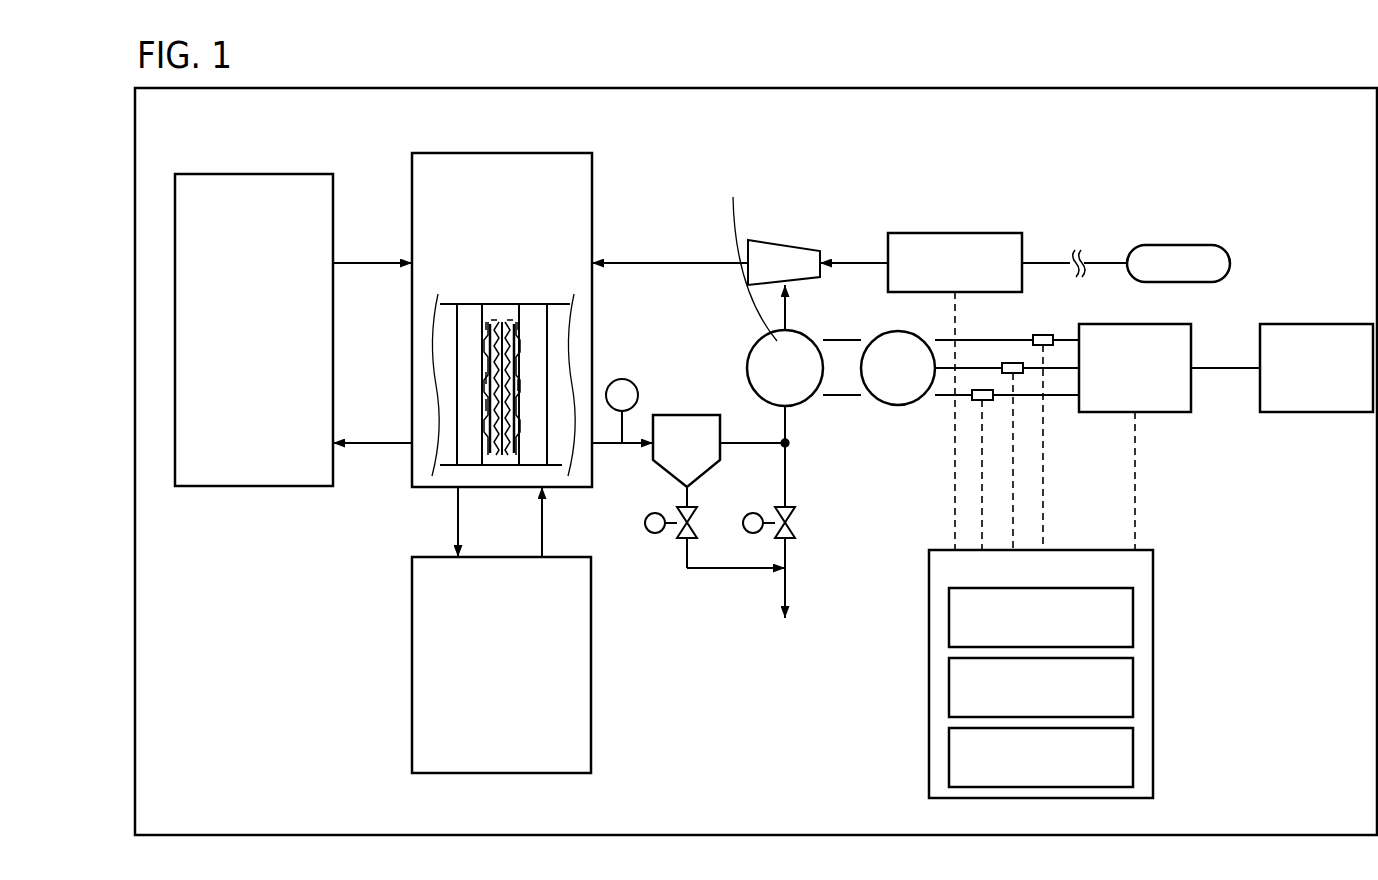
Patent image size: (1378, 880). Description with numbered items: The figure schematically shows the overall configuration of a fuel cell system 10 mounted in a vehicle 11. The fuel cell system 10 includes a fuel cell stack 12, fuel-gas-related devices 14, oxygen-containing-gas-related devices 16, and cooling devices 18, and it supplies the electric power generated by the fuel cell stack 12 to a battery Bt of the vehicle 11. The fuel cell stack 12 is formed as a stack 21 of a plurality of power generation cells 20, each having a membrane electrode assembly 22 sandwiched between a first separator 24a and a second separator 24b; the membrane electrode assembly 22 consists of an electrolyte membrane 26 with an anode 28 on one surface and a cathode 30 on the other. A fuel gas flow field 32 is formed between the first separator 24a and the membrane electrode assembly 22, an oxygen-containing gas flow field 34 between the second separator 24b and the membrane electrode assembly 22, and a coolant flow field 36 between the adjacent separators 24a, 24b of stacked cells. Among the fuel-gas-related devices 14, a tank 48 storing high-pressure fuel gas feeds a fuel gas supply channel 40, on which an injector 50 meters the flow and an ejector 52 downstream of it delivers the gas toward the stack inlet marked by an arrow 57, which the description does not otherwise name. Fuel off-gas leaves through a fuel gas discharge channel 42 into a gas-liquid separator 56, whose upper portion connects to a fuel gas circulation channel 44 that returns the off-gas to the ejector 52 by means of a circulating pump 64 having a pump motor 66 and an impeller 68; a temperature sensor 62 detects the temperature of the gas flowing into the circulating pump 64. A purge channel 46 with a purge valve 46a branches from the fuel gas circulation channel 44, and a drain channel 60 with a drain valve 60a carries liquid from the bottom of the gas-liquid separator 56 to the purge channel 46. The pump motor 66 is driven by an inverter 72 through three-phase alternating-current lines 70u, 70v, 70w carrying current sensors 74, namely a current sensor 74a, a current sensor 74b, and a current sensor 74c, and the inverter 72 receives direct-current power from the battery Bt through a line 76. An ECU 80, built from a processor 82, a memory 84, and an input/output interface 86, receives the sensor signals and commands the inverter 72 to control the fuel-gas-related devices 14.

The fuel cell system 10 is at (204, 145).
The vehicle 11 is at (392, 88).
The fuel cell stack 12 is at (397, 160).
The fuel-gas-related devices 14 is at (989, 224).
The oxygen-containing-gas-related devices 16 is at (240, 165).
The cooling devices 18 is at (395, 633).
The power generation cell 20 is at (533, 462).
The stack 21 is at (550, 471).
The membrane electrode assembly 22 is at (457, 256).
The first separator 24a is at (489, 354).
The second separator 24b is at (516, 360).
The electrolyte membrane 26 is at (502, 330).
The anode 28 is at (488, 338).
The cathode 30 is at (517, 338).
The fuel gas flow field 32 is at (488, 380).
The oxygen-containing gas flow field 34 is at (516, 385).
The coolant flow field 36 is at (489, 405).
The fuel gas supply channel 40 is at (655, 263).
The fuel gas discharge channel 42 is at (605, 447).
The fuel gas circulation channel 44 is at (788, 424).
The purge channel 46 is at (788, 479).
The purge valve 46a is at (797, 524).
The tank 48 is at (1167, 245).
The injector 50 is at (955, 233).
The ejector 52 is at (770, 240).
The gas-liquid separator 56 is at (688, 415).
The fuel gas inlet 57 is at (612, 244).
The drain channel 60 is at (718, 570).
The drain valve 60a is at (655, 534).
The temperature sensor 62 is at (633, 381).
The circulating pump 64 is at (778, 343).
The pump motor 66 is at (883, 330).
The impeller 68 is at (802, 275).
The line 70u is at (1065, 338).
The line 70v is at (1063, 372).
The line 70w is at (1052, 399).
The inverter 72 is at (1172, 412).
The current sensors 74 is at (987, 384).
The current sensor 74a is at (1040, 333).
The current sensor 74b is at (1010, 362).
The current sensor 74c is at (974, 402).
The line 76 is at (1203, 365).
The battery Bt is at (1302, 324).
The ECU 80 is at (1153, 569).
The processor 82 is at (1133, 621).
The memory 84 is at (1133, 691).
The input/output interface 86 is at (1133, 761).